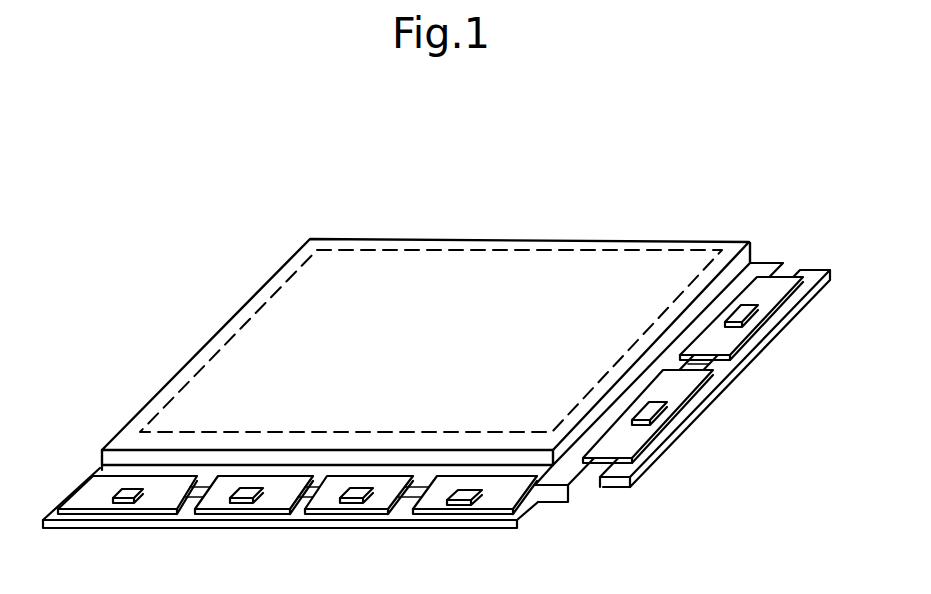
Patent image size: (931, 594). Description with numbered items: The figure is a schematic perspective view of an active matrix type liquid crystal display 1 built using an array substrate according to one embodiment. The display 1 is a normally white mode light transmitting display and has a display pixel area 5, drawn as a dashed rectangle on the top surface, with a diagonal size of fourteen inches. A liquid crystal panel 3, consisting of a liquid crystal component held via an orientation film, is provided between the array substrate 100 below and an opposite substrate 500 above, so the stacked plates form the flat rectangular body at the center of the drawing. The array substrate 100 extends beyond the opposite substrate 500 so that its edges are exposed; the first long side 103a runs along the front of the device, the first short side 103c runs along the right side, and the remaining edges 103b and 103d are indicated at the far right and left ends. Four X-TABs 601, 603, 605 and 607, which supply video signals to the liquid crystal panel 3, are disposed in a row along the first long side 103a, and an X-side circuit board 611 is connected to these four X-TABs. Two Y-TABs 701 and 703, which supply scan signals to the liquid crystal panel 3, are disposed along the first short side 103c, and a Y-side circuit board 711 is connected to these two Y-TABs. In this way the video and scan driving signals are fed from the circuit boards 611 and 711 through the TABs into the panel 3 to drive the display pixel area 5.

The active matrix type liquid crystal display 1 is at (500, 225).
The liquid crystal panel 3 is at (711, 186).
The display pixel area 5 is at (548, 432).
The array substrate 100 is at (758, 268).
The first long side 103a is at (553, 500).
The right outer circuit board 103b is at (790, 233).
The first short side 103c is at (578, 487).
The left circuit board 103d is at (100, 465).
The opposite substrate 500 is at (653, 242).
The X-TAB 601 is at (458, 505).
The X-TAB 603 is at (355, 505).
The X-TAB 605 is at (248, 505).
The X-TAB 607 is at (160, 498).
The X-side circuit board 611 is at (517, 520).
The Y-TAB 701 is at (678, 390).
The Y-TAB 703 is at (753, 320).
The Y-side circuit board 711 is at (660, 438).